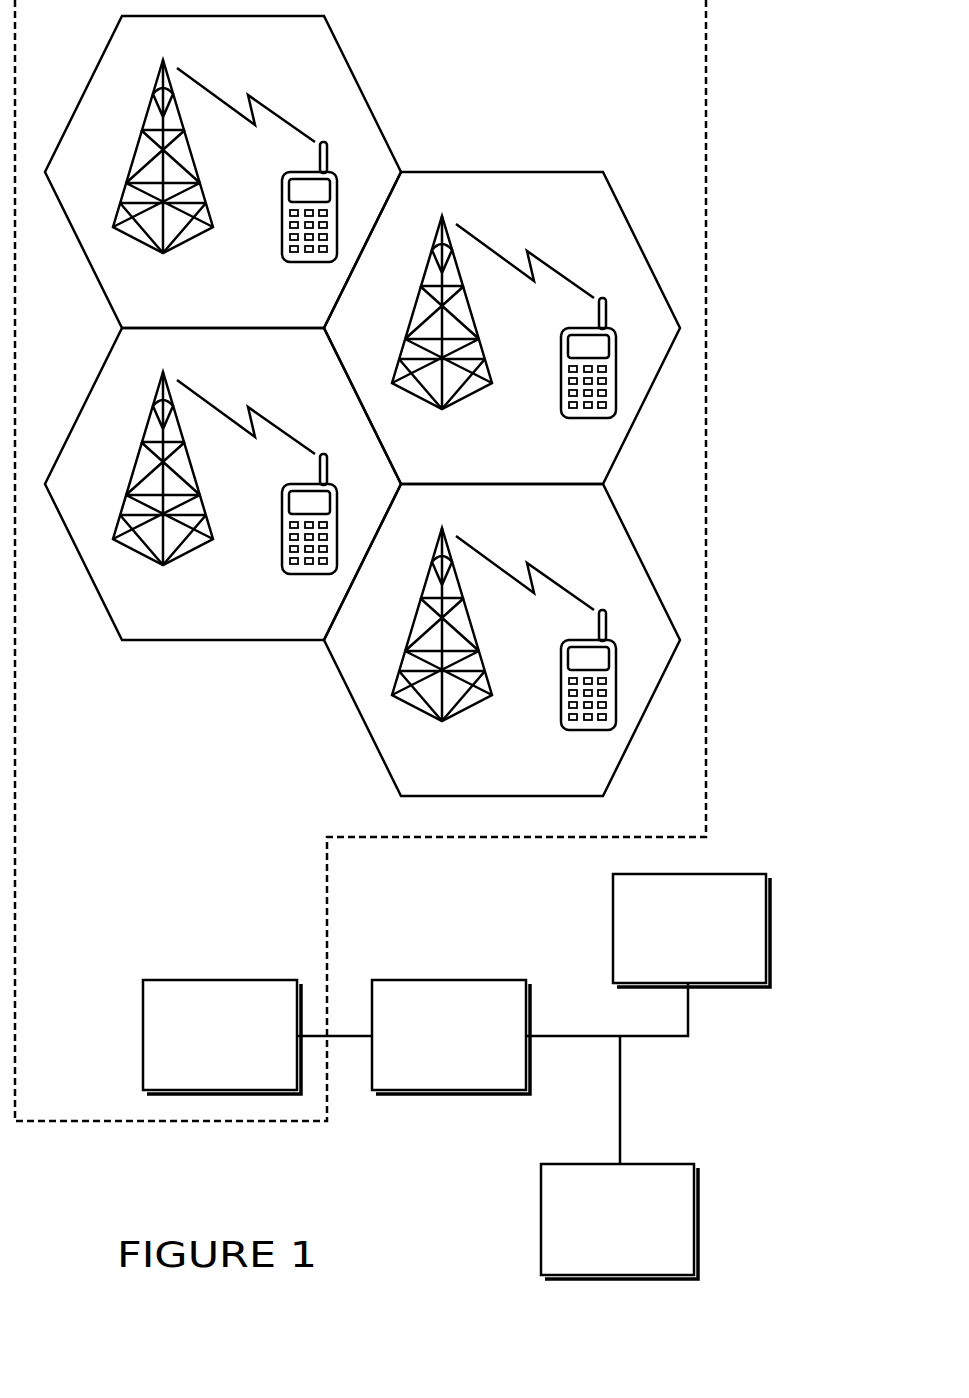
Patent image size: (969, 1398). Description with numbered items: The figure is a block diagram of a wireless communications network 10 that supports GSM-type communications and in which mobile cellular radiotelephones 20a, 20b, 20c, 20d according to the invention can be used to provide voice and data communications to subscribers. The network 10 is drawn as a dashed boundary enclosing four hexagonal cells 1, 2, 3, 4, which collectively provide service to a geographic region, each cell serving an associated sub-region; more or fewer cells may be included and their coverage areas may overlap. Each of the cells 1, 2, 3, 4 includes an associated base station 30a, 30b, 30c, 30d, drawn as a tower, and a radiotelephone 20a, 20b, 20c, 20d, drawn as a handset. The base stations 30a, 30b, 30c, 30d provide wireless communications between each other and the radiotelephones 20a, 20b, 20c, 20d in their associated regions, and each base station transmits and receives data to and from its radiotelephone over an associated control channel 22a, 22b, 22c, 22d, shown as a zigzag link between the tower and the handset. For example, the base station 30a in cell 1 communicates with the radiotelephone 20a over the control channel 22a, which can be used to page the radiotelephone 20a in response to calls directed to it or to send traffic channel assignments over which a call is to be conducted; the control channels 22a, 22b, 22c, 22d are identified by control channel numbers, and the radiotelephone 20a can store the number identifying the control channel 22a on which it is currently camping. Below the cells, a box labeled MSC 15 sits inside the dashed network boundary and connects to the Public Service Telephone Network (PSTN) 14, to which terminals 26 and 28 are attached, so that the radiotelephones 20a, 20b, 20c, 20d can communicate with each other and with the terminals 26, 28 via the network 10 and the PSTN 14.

The wireless communications network 10 is at (686, 37).
The cell 1 is at (144, 57).
The cell 2 is at (423, 213).
The cell 3 is at (144, 369).
The cell 4 is at (423, 525).
The radiotelephone 20a is at (282, 215).
The radiotelephone 20b is at (561, 371).
The radiotelephone 20c is at (282, 527).
The radiotelephone 20d is at (561, 683).
The control channel 22a is at (283, 119).
The control channel 22b is at (562, 275).
The control channel 22c is at (283, 431).
The control channel 22d is at (562, 587).
The base station 30a is at (163, 253).
The base station 30b is at (442, 409).
The base station 30c is at (163, 565).
The base station 30d is at (442, 721).
The mobile switching center (MSC) 15 is at (237, 1075).
The Public Service Telephone Network (PSTN) 14 is at (465, 1075).
The terminal 26 is at (706, 945).
The terminal 28 is at (635, 1236).